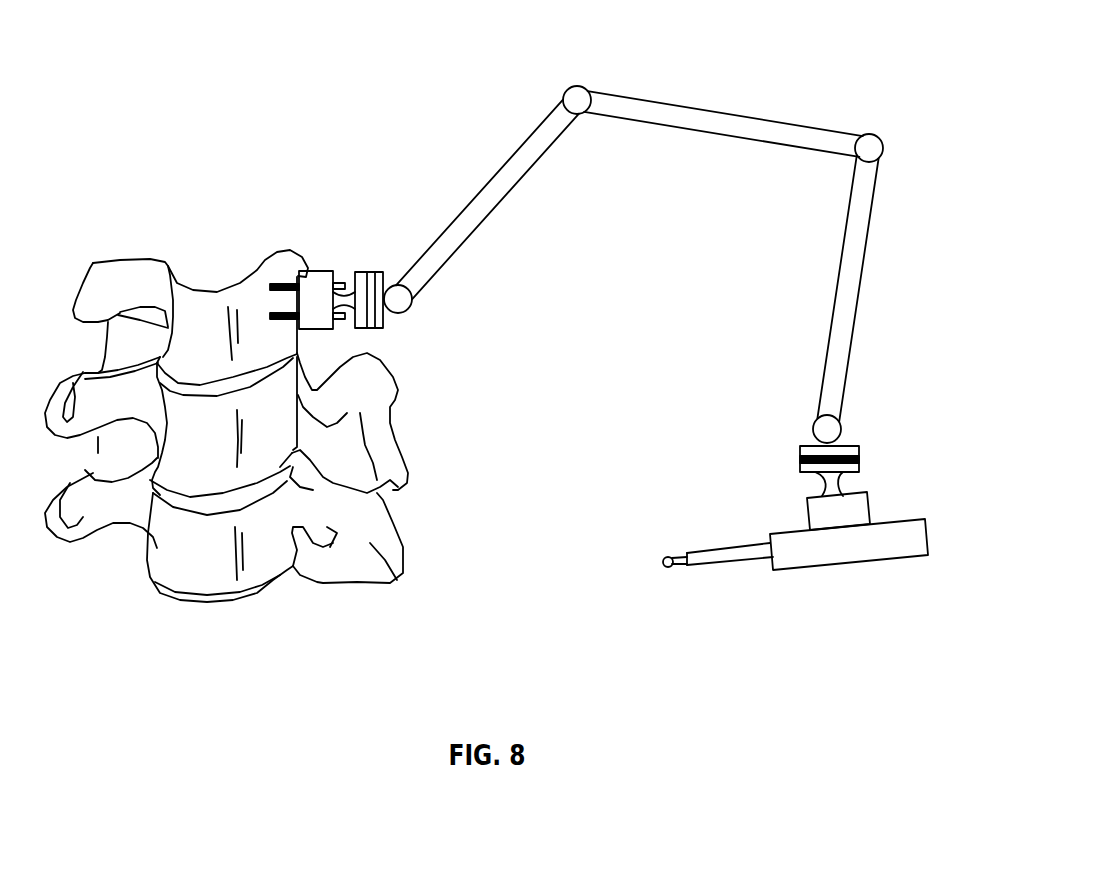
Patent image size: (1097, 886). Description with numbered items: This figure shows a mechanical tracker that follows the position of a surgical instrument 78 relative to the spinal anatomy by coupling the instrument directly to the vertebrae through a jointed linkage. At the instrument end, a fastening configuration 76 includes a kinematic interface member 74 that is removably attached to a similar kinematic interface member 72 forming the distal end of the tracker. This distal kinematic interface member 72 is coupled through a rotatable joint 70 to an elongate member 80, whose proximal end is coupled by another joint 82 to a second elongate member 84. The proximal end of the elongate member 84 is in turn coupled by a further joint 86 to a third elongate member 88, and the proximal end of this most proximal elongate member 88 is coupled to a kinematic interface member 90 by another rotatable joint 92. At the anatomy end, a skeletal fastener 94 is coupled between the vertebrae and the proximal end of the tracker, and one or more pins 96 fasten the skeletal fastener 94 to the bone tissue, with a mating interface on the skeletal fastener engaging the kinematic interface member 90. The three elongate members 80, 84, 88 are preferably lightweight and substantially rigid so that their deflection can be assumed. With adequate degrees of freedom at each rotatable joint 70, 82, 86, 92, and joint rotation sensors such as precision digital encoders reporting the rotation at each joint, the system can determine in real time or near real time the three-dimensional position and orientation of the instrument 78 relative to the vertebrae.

The rotatable joint 70 is at (814, 424).
The kinematic interface member 72 is at (800, 452).
The kinematic interface member 74 is at (800, 467).
The fastening configuration 76 is at (875, 462).
The surgical instrument 78 is at (728, 578).
The elongate member 80 is at (863, 272).
The joint 82 is at (884, 141).
The elongate member 84 is at (713, 110).
The joint 86 is at (578, 86).
The elongate member 88 is at (475, 200).
The kinematic interface member 90 is at (375, 322).
The rotatable joint 92 is at (412, 307).
The skeletal fastener 94 is at (319, 268).
The pins 96 is at (277, 285).